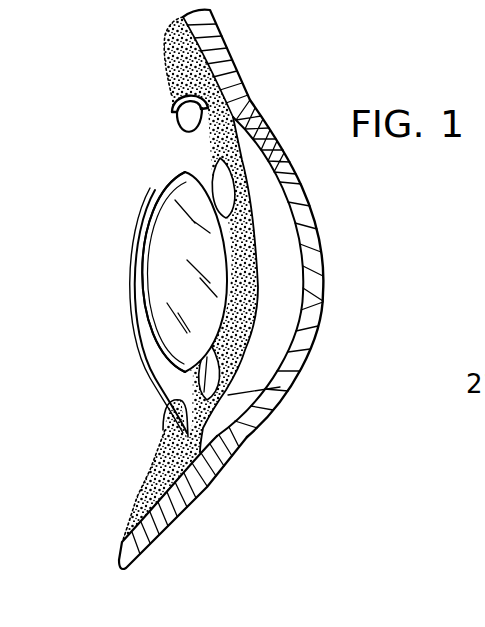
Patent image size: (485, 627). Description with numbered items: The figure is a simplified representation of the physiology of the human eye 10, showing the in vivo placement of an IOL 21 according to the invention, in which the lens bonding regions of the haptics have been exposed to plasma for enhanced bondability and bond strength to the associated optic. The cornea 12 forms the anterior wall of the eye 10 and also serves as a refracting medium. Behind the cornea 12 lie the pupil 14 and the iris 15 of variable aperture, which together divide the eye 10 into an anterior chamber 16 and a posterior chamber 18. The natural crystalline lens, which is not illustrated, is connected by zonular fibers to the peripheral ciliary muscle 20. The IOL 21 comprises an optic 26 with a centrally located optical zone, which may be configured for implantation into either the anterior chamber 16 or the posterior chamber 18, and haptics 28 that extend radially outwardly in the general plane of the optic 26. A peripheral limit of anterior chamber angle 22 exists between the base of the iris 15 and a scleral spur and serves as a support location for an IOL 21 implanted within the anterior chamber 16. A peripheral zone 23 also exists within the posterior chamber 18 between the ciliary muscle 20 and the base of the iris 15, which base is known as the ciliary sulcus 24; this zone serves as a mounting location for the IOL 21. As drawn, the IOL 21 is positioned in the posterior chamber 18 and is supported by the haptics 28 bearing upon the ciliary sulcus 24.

The eye 10 is at (242, 497).
The cornea 12 is at (318, 325).
The pupil 14 is at (225, 287).
The iris 15 is at (245, 357).
The anterior chamber 16 is at (273, 189).
The posterior chamber 18 is at (123, 190).
The ciliary muscle 20 is at (152, 410).
The IOL 21 is at (129, 273).
The anterior chamber angle 22 is at (220, 438).
The peripheral zone 23 is at (212, 412).
The ciliary sulcus 24 is at (232, 434).
The optic 26 is at (165, 237).
The haptics 28 is at (140, 368).